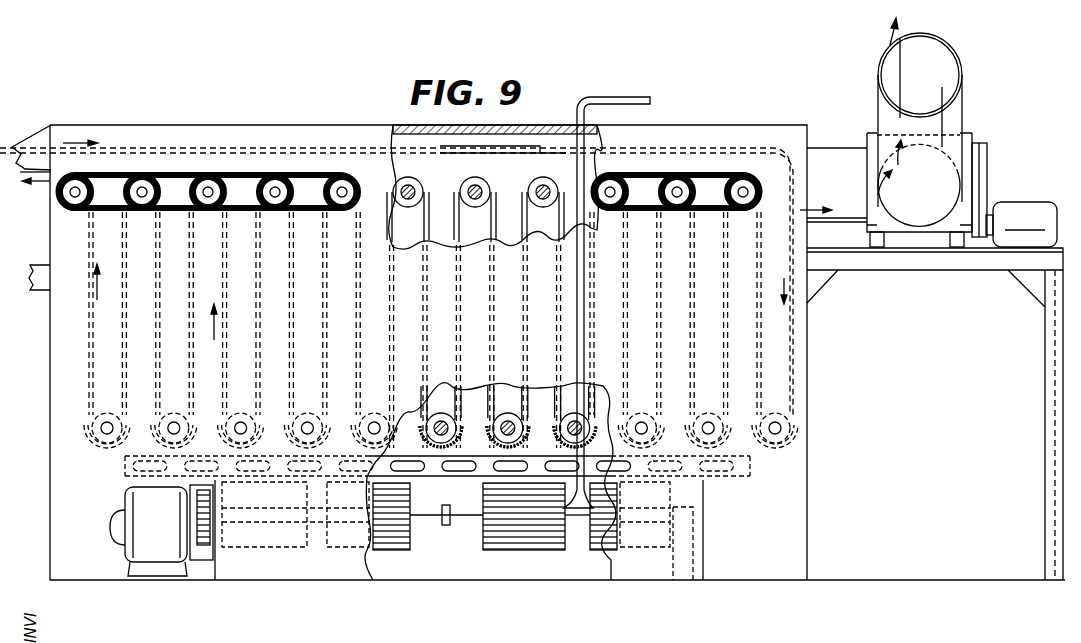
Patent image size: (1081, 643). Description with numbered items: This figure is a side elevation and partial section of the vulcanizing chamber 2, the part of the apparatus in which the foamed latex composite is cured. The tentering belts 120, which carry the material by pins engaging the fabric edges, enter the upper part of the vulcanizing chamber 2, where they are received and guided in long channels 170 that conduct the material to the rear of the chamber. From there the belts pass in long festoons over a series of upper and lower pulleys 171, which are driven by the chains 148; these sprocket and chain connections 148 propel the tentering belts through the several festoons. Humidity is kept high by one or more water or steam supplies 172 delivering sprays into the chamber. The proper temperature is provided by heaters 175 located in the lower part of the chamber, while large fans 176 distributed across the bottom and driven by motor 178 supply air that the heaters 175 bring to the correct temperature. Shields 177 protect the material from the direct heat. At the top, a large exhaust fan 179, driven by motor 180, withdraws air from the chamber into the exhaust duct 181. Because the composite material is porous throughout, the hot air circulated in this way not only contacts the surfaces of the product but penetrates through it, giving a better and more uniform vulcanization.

The vulcanizing chamber 2 is at (315, 120).
The tentering belts 120 is at (500, 229).
The sprocket and chain connections 148 is at (179, 175).
The long channels 170 is at (440, 147).
The upper and lower pulleys 171 is at (476, 209).
The water or steam supplies 172 is at (621, 94).
The heaters 175 is at (468, 478).
The fans 176 is at (410, 551).
The shields 177 is at (111, 458).
The motor 178 is at (143, 535).
The exhaust fan 179 is at (968, 163).
The motor 180 is at (1013, 202).
The exhaust duct 181 is at (962, 116).